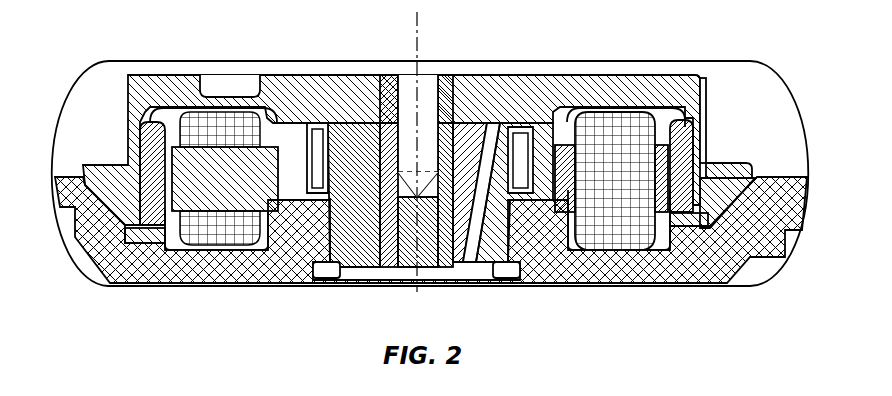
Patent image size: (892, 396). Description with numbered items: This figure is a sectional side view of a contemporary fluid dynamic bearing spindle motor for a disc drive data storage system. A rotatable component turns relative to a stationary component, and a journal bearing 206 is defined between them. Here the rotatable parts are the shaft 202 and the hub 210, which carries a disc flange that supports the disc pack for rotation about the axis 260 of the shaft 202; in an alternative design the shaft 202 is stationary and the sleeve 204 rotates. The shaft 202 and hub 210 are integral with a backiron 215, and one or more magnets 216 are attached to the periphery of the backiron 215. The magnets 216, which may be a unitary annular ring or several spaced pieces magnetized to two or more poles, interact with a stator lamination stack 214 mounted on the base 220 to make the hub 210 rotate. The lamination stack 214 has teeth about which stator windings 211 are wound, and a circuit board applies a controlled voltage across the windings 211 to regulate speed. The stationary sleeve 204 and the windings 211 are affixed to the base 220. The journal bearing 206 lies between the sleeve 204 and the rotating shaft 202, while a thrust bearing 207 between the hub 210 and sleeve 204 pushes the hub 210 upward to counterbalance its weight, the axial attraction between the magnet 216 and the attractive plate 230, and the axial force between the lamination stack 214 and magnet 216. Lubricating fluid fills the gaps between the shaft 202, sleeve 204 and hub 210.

The shaft 202 is at (400, 248).
The sleeve 204 is at (461, 248).
The journal bearing 206 is at (366, 126).
The thrust bearing 207 is at (377, 193).
The hub 210 is at (501, 121).
The stator windings 211 is at (618, 122).
The stator lamination stack 214 is at (217, 158).
The backiron 215 is at (704, 78).
The magnet 216 is at (684, 195).
The base 220 is at (618, 256).
The attractive plate 230 is at (141, 235).
The axis 260 is at (420, 45).